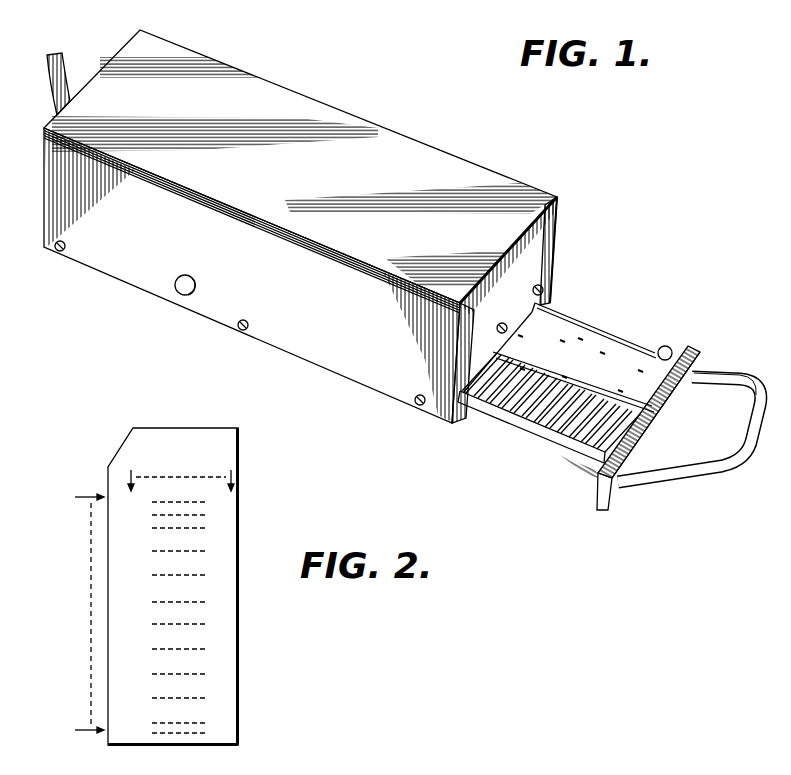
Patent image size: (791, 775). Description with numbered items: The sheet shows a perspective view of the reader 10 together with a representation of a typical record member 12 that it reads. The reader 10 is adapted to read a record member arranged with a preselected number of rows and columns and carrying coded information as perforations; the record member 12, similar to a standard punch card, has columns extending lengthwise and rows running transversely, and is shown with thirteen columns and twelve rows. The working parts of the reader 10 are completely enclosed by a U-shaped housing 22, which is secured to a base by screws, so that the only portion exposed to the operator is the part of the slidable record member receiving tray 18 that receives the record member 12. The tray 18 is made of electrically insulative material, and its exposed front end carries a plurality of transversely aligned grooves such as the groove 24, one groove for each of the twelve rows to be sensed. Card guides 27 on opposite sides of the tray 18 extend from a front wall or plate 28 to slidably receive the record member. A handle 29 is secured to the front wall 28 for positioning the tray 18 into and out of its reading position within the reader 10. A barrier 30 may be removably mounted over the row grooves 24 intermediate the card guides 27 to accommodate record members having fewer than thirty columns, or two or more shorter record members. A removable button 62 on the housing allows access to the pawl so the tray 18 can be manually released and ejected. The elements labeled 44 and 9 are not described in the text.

In FIG. 1, the reader 10 is at (335, 93).
In FIG. 1, the U-shaped housing 22 is at (444, 152).
In FIG. 1, the end wall 44 is at (538, 250).
In FIG. 1, the removable button 62 is at (183, 290).
In FIG. 1, the card guides 27 is at (595, 327).
In FIG. 1, the record member 12 is at (613, 347).
In FIG. 2, the record member 12 is at (135, 438).
In FIG. 1, the barrier 30 is at (585, 394).
In FIG. 1, the record member receiving tray 18 is at (493, 417).
In FIG. 1, the groove 24 is at (507, 407).
In FIG. 1, the front wall 28 is at (617, 493).
In FIG. 1, the handle 29 is at (703, 484).
In FIG. 2, the card bottom edge 9 is at (160, 748).